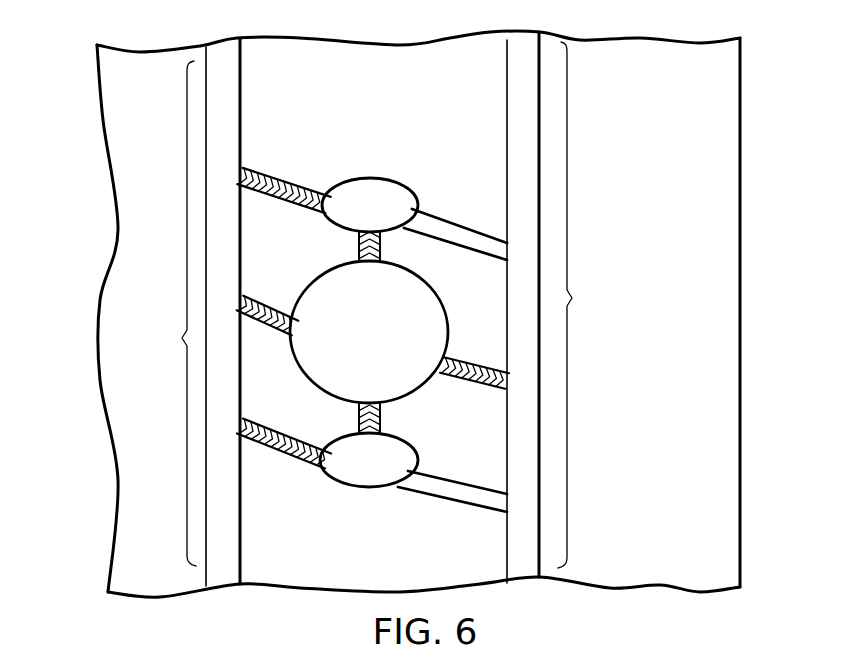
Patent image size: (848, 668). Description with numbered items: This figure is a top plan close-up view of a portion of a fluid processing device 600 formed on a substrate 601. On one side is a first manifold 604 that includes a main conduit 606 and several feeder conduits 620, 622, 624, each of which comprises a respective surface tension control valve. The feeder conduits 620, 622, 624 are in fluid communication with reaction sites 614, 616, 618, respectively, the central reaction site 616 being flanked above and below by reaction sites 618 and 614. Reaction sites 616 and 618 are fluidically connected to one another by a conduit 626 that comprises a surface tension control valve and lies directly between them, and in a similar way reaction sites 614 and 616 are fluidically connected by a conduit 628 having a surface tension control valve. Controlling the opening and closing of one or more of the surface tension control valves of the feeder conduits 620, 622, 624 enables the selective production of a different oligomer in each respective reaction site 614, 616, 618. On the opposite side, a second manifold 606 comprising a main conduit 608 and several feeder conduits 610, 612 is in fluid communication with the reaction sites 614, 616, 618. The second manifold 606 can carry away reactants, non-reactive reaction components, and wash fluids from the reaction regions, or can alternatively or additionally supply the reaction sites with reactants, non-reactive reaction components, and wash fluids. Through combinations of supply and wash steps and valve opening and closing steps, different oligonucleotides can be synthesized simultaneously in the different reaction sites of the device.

The fluid processing device 600 is at (84, 237).
The substrate 601 is at (717, 376).
The first manifold 604 is at (167, 313).
The main conduit 606 is at (208, 232).
The main conduit 608 is at (536, 205).
The feeder conduit 610 is at (447, 222).
The feeder conduit 612 is at (476, 358).
The reaction site 614 is at (472, 455).
The reaction site 616 is at (369, 332).
The reaction site 618 is at (370, 205).
The feeder conduit 620 is at (264, 424).
The feeder conduit 622 is at (265, 296).
The feeder conduit 624 is at (285, 177).
The conduit 626 is at (382, 245).
The conduit 628 is at (382, 417).